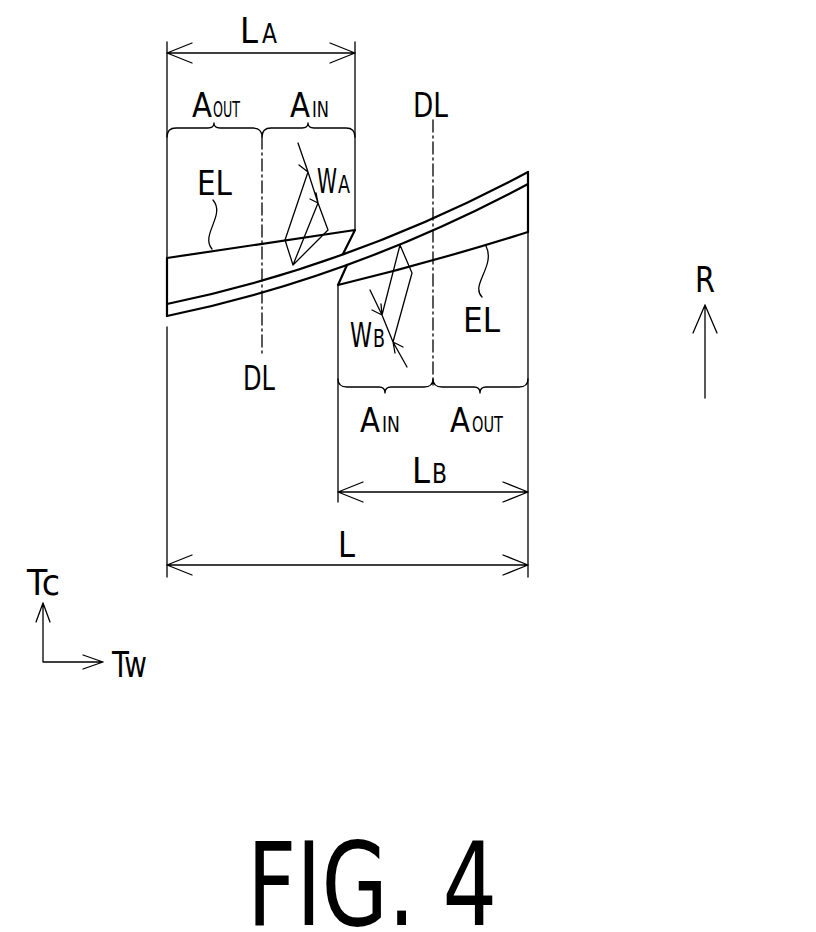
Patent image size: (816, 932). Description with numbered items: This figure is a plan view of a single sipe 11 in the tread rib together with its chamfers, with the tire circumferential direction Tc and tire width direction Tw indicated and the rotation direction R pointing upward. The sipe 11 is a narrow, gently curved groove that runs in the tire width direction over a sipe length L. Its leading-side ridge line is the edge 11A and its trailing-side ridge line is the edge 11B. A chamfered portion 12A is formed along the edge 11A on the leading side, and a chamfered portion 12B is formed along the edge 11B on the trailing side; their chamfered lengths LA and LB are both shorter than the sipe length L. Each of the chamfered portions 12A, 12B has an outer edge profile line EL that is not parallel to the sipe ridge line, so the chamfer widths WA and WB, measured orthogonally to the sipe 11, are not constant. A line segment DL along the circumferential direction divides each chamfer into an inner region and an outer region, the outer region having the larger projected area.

The sipe 11 is at (398, 241).
The edge on the leading side 11A is at (498, 190).
The edge on the trailing side 11B is at (206, 302).
The chamfered portion 12A is at (180, 280).
The chamfered portion 12B is at (510, 217).